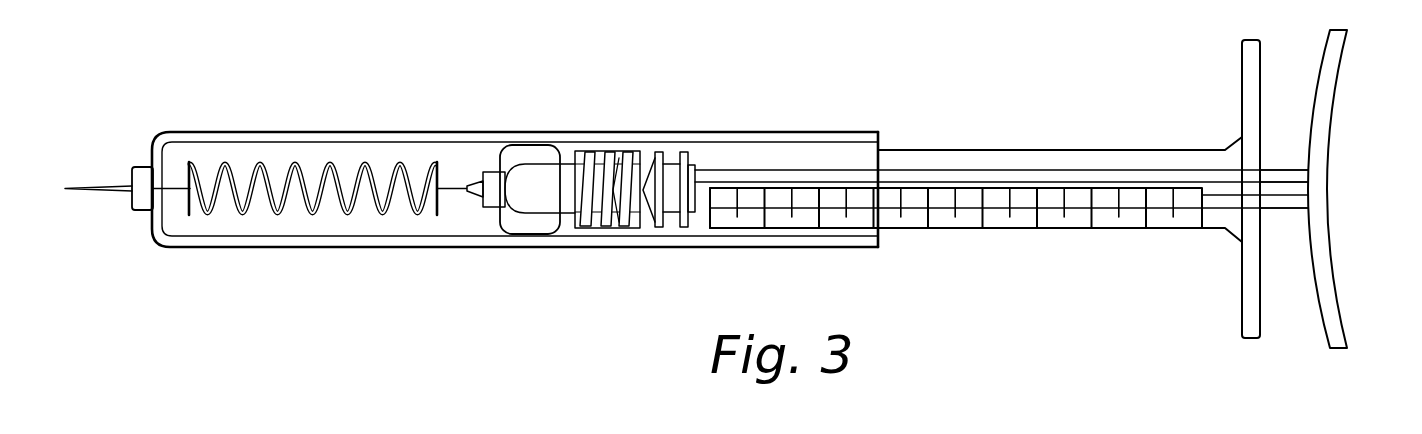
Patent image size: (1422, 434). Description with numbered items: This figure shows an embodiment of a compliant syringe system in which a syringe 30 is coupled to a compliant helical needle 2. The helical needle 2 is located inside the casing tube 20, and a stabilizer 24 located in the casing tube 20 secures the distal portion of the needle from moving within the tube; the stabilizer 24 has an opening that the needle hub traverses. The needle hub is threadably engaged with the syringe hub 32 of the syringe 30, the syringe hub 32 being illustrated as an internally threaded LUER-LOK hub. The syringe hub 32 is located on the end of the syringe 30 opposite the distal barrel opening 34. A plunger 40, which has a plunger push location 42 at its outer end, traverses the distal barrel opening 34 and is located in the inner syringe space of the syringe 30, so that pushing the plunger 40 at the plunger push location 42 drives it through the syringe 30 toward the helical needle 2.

The helical needle 2 is at (93, 188).
The casing tube 20 is at (398, 245).
The stabilizer 24 is at (532, 223).
The syringe 30 is at (1042, 148).
The syringe hub 32 is at (602, 158).
The distal barrel opening 34 is at (1266, 157).
The plunger 40 is at (1287, 200).
The plunger push location 42 is at (1328, 110).